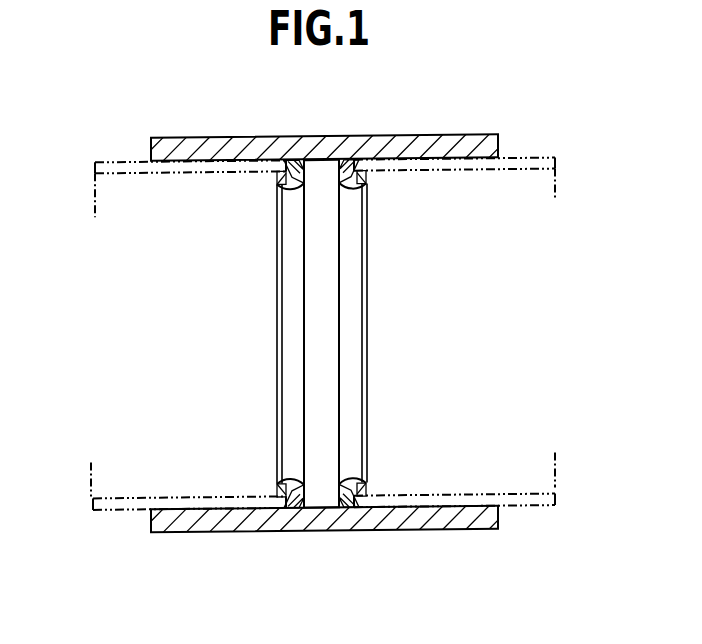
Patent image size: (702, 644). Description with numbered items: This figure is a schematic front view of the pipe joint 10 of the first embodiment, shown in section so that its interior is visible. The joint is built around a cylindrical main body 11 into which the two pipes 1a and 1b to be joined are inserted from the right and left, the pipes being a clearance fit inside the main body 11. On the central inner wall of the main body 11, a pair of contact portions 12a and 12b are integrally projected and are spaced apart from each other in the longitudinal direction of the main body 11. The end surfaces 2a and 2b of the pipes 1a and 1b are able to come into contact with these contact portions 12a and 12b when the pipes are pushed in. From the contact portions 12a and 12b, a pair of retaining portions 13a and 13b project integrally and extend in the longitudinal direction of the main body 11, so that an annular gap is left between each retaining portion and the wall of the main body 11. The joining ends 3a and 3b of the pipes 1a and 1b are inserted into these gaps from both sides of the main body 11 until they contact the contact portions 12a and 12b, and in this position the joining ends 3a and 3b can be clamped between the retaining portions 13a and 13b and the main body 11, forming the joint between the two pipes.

The pipe joint 10 is at (533, 223).
The cylindrical main body 11 is at (477, 142).
The pipe 1a is at (517, 158).
The pipe 1b is at (97, 160).
The end surface 2a is at (357, 529).
The end surface 2b is at (294, 529).
The joining end 3a is at (371, 159).
The joining end 3b is at (266, 517).
The contact portion 12a is at (346, 160).
The contact portion 12b is at (284, 162).
The retaining portion 13a is at (368, 184).
The retaining portion 13b is at (274, 182).